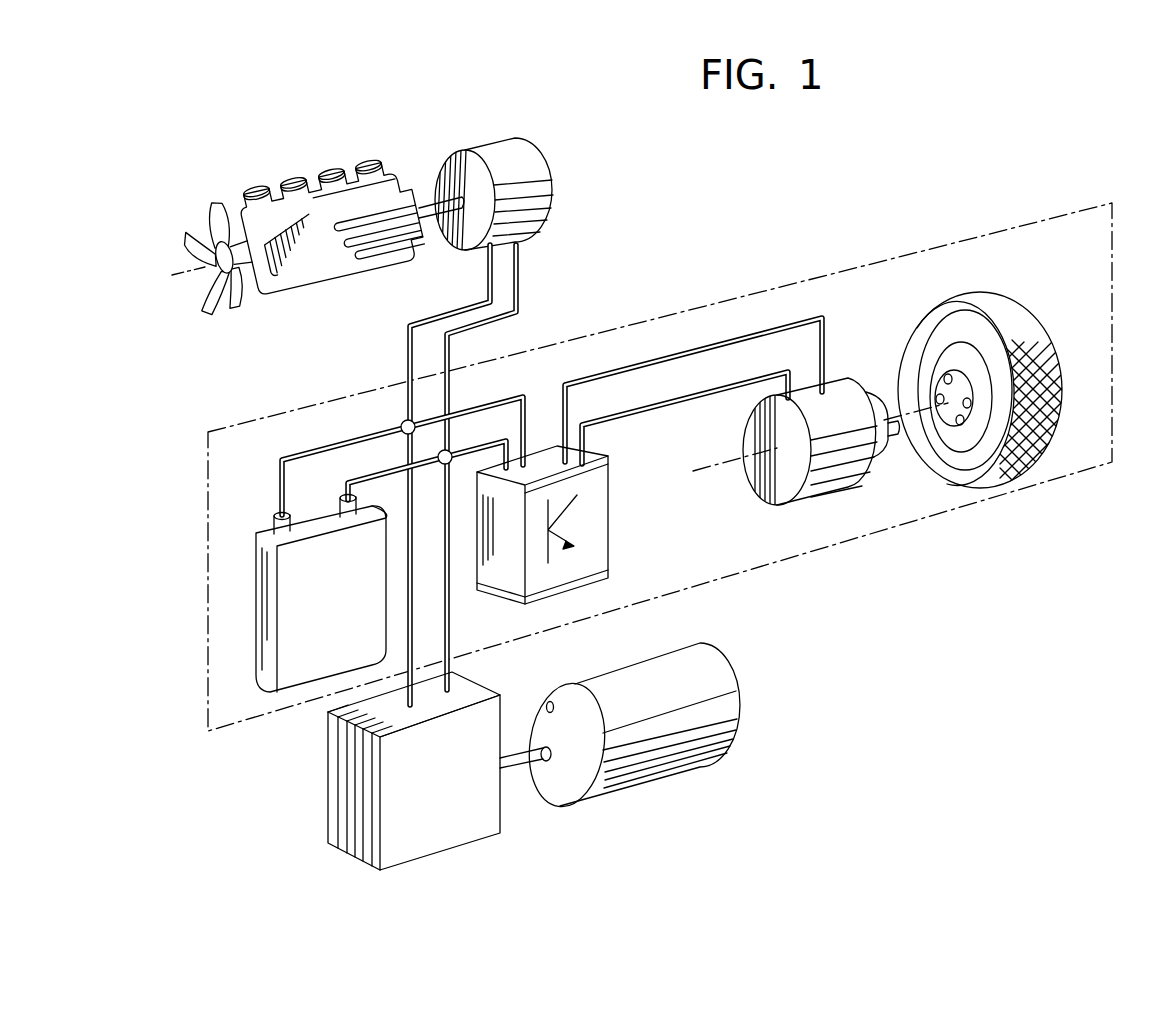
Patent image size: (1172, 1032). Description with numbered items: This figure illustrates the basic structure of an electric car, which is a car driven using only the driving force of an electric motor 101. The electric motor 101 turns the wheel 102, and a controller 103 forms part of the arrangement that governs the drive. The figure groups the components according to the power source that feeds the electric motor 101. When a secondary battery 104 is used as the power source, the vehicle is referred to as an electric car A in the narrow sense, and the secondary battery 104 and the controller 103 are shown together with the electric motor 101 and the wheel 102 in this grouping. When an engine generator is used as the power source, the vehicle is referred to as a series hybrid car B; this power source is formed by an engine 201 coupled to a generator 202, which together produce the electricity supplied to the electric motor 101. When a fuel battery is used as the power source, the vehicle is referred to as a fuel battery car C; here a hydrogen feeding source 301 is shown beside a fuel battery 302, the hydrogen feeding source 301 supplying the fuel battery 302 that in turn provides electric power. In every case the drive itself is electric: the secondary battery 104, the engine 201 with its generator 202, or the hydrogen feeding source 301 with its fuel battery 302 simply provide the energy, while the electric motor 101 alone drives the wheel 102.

The electric car A is at (1019, 222).
The series hybrid car B is at (566, 183).
The fuel battery car C is at (744, 658).
The electric motor 101 is at (812, 503).
The wheel 102 is at (1020, 306).
The controller 103 is at (612, 537).
The secondary battery 104 is at (263, 522).
The engine 201 is at (295, 168).
The generator 202 is at (536, 146).
The hydrogen feeding source 301 is at (676, 782).
The fuel battery 302 is at (502, 820).